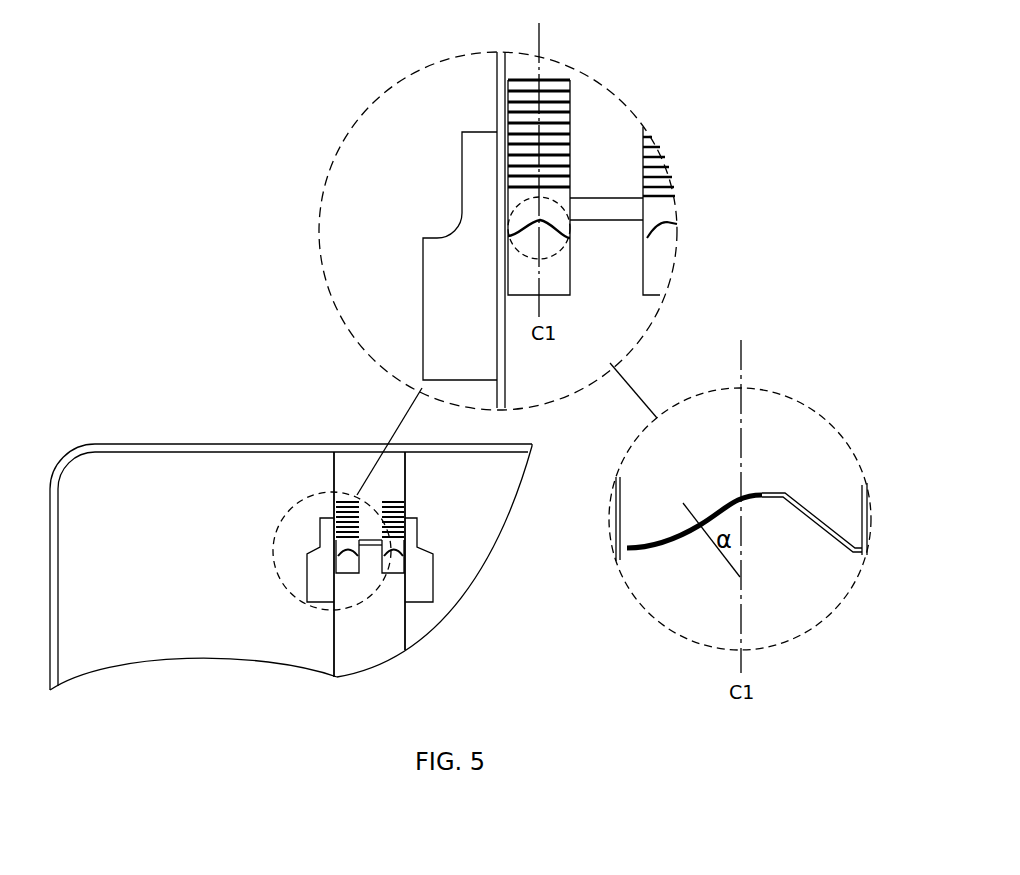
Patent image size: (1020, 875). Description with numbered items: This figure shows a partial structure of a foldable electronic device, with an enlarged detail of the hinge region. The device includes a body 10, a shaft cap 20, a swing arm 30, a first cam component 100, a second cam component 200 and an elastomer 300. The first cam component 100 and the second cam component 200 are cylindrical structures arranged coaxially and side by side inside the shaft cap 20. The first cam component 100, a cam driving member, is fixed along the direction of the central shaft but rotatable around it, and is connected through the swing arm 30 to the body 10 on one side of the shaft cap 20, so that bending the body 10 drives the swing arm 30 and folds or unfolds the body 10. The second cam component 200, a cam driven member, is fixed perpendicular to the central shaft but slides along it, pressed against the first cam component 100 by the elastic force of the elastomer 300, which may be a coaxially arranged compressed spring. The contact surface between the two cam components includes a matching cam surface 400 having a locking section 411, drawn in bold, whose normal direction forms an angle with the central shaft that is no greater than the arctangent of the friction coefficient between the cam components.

The body 10 is at (345, 173).
The shaft cap 20 is at (600, 110).
The swing arm 30 is at (430, 335).
The first cam component 100 is at (560, 272).
The second cam component 200 is at (561, 203).
The elastomer 300 is at (523, 77).
The cam surface 400 is at (497, 220).
The locking section 411 is at (658, 535).